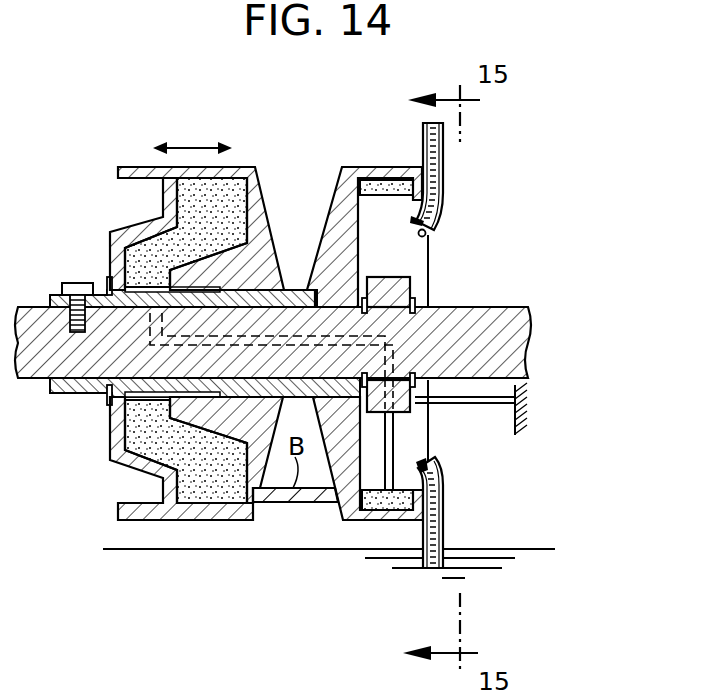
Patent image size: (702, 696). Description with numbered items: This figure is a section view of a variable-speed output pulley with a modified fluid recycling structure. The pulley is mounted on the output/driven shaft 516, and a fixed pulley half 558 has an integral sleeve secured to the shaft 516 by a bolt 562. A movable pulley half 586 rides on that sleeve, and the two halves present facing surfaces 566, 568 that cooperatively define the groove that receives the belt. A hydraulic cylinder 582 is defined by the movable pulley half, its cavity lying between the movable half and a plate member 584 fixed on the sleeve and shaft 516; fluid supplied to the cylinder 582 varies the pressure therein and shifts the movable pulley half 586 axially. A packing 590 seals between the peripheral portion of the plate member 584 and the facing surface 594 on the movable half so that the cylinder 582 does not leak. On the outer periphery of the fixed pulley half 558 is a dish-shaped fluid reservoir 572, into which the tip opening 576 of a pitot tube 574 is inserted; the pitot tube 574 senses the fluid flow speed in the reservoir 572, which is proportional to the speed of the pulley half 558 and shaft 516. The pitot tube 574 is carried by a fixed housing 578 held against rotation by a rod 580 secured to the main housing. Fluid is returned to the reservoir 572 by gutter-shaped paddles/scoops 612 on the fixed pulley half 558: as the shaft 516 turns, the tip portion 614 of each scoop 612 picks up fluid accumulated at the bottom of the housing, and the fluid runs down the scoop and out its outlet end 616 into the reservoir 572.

The output/driven shaft 516 is at (513, 332).
The bolt 562 is at (72, 282).
The hydraulic cylinder 582 is at (233, 200).
The plate member 584 is at (138, 230).
The facing surface 594 is at (212, 187).
The fixed pulley half 558 is at (338, 185).
The fluid reservoir 572 is at (388, 167).
The facing surface 566 is at (317, 495).
The tip opening 576 is at (373, 508).
The facing surface 568 is at (278, 492).
The movable pulley half 586 is at (187, 413).
The packing 590 is at (165, 480).
The fixed housing 578 is at (410, 286).
The pitot tube 574 is at (393, 445).
The rod 580 is at (457, 403).
The tip portion 614 is at (428, 573).
The paddles/scoops 612 is at (445, 176).
The outlet end 616 is at (427, 240).